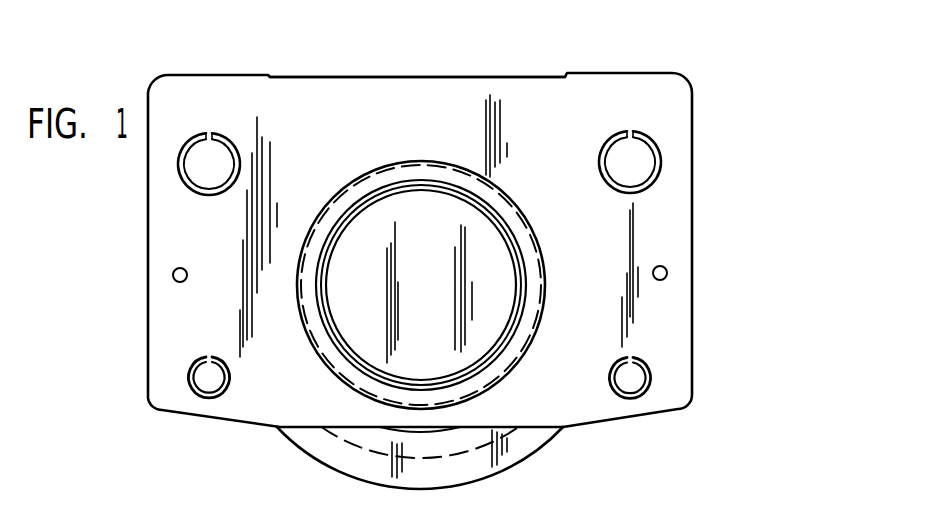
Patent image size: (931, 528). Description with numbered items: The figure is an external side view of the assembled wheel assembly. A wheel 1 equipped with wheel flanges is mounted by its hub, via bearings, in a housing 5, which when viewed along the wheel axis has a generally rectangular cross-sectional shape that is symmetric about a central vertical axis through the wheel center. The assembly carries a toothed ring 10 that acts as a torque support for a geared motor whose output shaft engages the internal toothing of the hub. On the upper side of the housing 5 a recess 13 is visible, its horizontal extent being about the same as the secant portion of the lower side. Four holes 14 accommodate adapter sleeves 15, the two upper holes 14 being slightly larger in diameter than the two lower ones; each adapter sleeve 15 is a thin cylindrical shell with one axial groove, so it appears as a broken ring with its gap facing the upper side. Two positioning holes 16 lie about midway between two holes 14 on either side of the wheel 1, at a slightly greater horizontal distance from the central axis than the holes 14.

The wheel 1 is at (520, 452).
The housing 5 is at (546, 137).
The toothed ring 10 is at (523, 275).
The recess 13 is at (508, 77).
The holes 14 is at (640, 175).
The adapter sleeves 15 is at (652, 140).
The positioning holes 16 is at (667, 273).